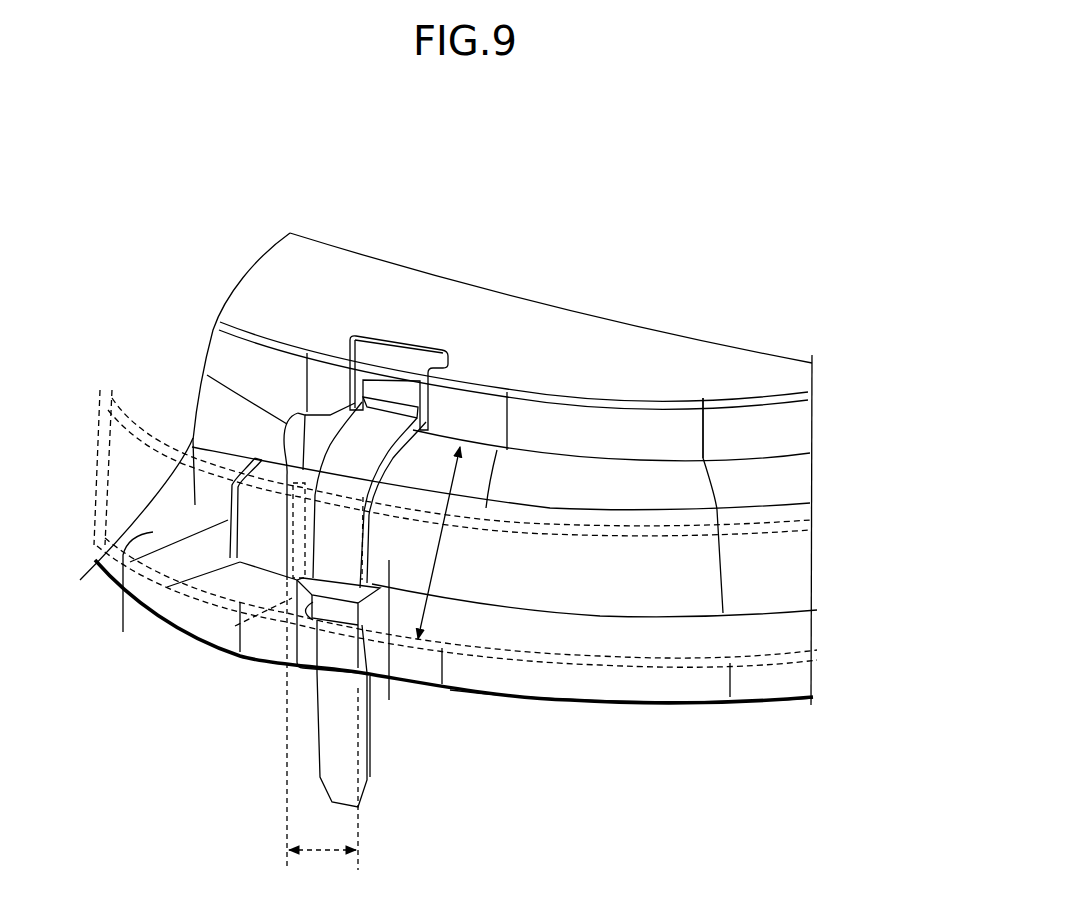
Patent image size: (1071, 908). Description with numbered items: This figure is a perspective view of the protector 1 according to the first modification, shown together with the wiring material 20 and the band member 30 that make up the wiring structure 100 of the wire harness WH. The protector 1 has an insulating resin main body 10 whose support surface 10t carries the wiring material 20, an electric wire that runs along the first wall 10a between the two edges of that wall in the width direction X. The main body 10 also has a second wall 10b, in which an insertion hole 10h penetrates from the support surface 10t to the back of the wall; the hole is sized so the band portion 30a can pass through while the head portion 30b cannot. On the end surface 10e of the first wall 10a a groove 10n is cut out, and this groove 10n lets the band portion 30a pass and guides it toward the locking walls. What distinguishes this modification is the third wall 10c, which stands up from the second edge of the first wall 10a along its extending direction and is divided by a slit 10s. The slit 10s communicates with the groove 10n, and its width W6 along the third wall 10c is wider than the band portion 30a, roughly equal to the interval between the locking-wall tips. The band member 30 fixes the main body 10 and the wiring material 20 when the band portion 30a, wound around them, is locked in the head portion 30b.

The protector 1 is at (685, 170).
The main body 10 is at (280, 162).
The first wall 10a is at (193, 440).
The second wall 10b is at (270, 372).
The third wall 10c is at (137, 432).
The end surface 10e is at (638, 687).
The insertion hole 10h is at (394, 362).
The groove 10n is at (297, 648).
The slit 10s is at (290, 587).
The support surface 10t is at (123, 632).
The wiring material 20 is at (779, 513).
The band member 30 is at (468, 735).
The band portion 30a is at (360, 460).
The head portion 30b is at (338, 647).
The wiring structure 100 is at (891, 154).
The wire harness WH is at (636, 142).
The width direction X is at (456, 602).
The width of the slit W6 is at (322, 855).